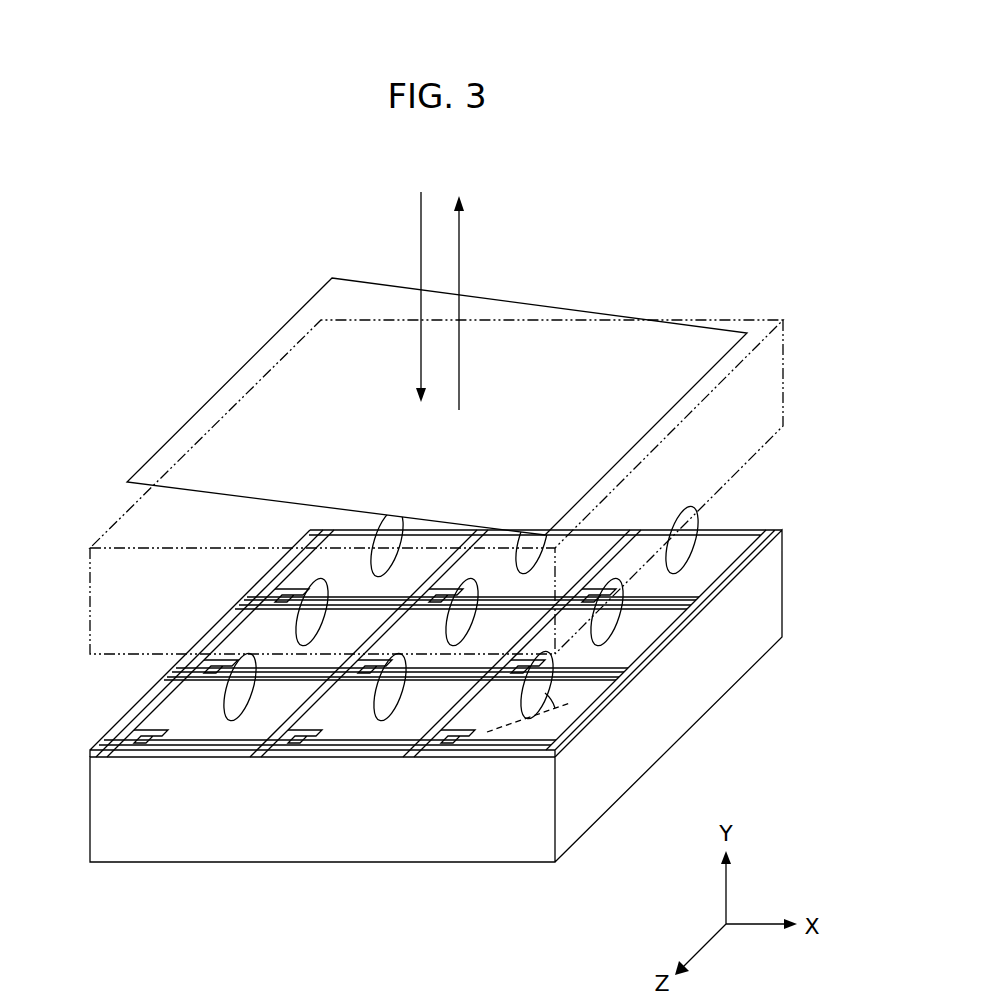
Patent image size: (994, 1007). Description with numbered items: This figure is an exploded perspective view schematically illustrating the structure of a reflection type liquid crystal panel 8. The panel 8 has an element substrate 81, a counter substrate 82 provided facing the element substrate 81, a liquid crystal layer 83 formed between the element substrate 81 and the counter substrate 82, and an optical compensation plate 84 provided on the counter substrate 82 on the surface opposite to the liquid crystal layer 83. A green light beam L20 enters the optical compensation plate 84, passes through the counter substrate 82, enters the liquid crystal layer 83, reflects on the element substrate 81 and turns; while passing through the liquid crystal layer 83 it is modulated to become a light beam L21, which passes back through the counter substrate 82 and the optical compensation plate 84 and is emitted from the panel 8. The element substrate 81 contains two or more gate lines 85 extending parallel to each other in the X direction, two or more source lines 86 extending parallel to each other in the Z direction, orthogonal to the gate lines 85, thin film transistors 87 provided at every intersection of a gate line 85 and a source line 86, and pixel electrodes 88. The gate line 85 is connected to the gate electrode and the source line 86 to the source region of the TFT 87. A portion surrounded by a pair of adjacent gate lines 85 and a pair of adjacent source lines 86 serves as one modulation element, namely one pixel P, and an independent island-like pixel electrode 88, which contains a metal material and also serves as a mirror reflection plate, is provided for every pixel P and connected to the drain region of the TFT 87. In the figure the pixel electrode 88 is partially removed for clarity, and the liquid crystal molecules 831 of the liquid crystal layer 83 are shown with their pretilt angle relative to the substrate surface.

The reflection type liquid crystal panel 8 is at (768, 252).
The element substrate 81 is at (83, 762).
The counter substrate 82 is at (83, 548).
The liquid crystal layer 83 is at (83, 657).
The liquid crystal molecules 831 is at (547, 687).
The optical compensation plate 84 is at (185, 442).
The gate line 85 is at (200, 749).
The source line 86 is at (283, 725).
The thin film transistor 87 is at (334, 735).
The pixel electrode 88 is at (395, 728).
The pixel P is at (590, 544).
The green light beam L20 is at (413, 368).
The light beam L21 is at (462, 367).